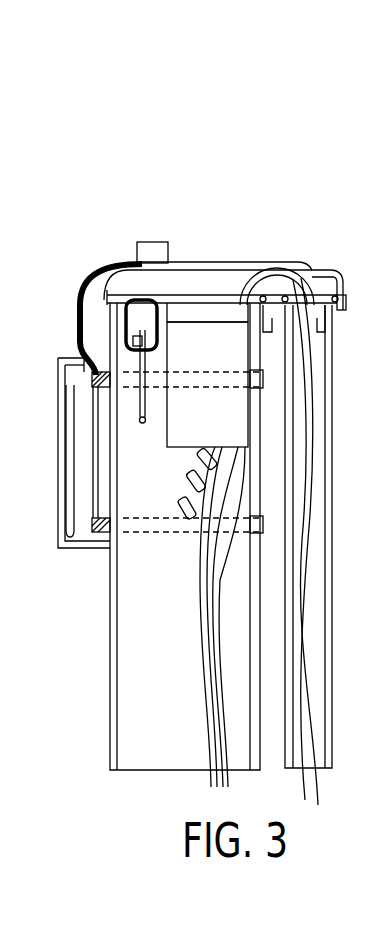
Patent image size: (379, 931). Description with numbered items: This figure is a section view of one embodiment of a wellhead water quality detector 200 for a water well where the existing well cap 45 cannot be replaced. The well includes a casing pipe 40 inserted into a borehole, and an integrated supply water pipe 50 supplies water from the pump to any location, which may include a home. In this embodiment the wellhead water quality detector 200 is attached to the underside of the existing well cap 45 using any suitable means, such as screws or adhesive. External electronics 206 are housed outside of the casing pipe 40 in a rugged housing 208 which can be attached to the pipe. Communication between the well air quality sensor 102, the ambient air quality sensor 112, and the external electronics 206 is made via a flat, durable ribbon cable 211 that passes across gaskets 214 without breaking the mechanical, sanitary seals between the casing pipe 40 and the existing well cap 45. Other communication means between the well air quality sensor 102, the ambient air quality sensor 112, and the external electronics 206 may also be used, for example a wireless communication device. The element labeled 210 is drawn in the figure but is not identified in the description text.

The casing pipe 40 is at (110, 622).
The existing well cap 45 is at (272, 262).
The integrated supply water pipe 50 is at (333, 538).
The well air quality sensor 102 is at (180, 455).
The ambient air quality sensor 112 is at (162, 230).
The wellhead water quality detector 200 is at (168, 428).
The external electronics 206 is at (91, 525).
The rugged housing 208 is at (58, 412).
The partition wall 210 is at (213, 321).
The ribbon cable 211 is at (58, 318).
The gaskets 214 is at (112, 300).